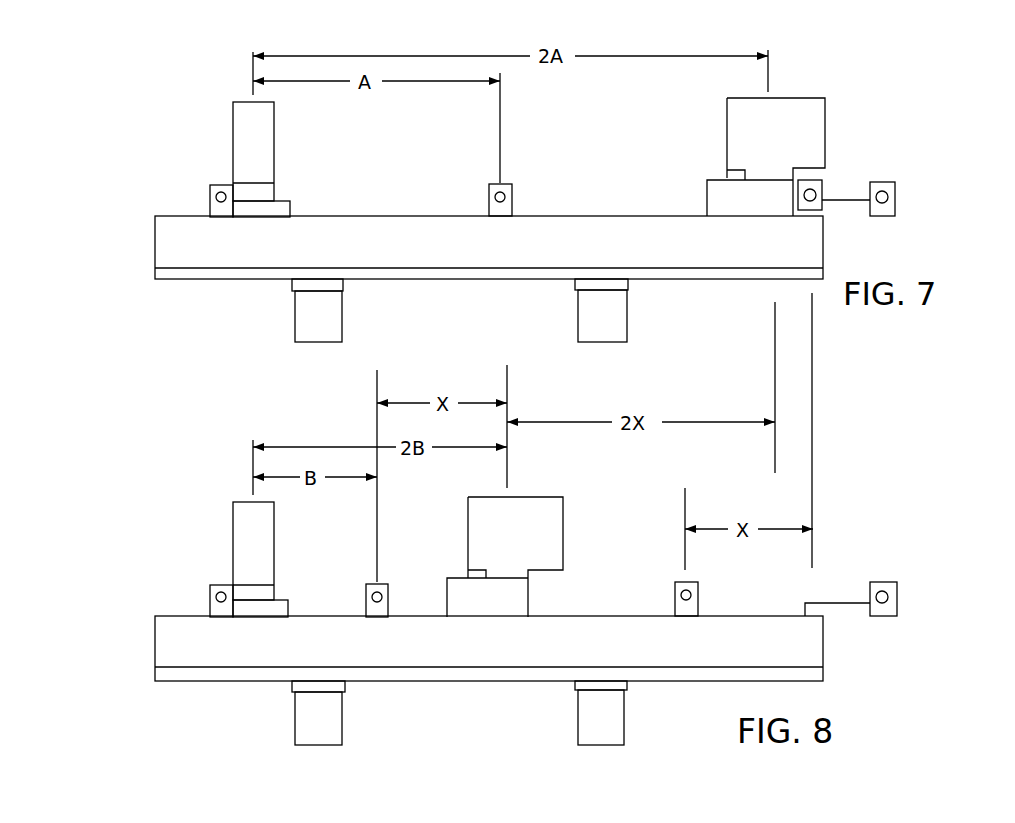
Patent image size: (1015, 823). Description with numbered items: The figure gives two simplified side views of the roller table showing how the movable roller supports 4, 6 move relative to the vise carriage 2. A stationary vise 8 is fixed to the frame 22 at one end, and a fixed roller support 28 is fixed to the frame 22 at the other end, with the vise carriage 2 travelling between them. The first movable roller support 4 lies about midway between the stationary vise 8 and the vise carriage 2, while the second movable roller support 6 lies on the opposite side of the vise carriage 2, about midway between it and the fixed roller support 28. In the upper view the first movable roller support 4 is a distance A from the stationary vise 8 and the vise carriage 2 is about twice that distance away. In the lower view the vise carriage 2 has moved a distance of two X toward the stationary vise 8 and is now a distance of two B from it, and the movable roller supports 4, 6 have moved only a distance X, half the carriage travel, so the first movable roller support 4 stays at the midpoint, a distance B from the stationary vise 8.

In FIG. 7, the vise carriage 2 is at (833, 96).
In FIG. 8, the vise carriage 2 is at (570, 522).
In FIG. 7, the first movable roller support 4 is at (526, 188).
In FIG. 8, the first movable roller support 4 is at (387, 578).
In FIG. 7, the second movable roller support 6 is at (828, 188).
In FIG. 8, the second movable roller support 6 is at (671, 589).
In FIG. 7, the stationary vise 8 is at (217, 122).
In FIG. 8, the stationary vise 8 is at (211, 533).
In FIG. 7, the frame 22 is at (287, 292).
In FIG. 8, the frame 22 is at (286, 707).
In FIG. 7, the fixed roller support 28 is at (908, 191).
In FIG. 8, the fixed roller support 28 is at (898, 580).